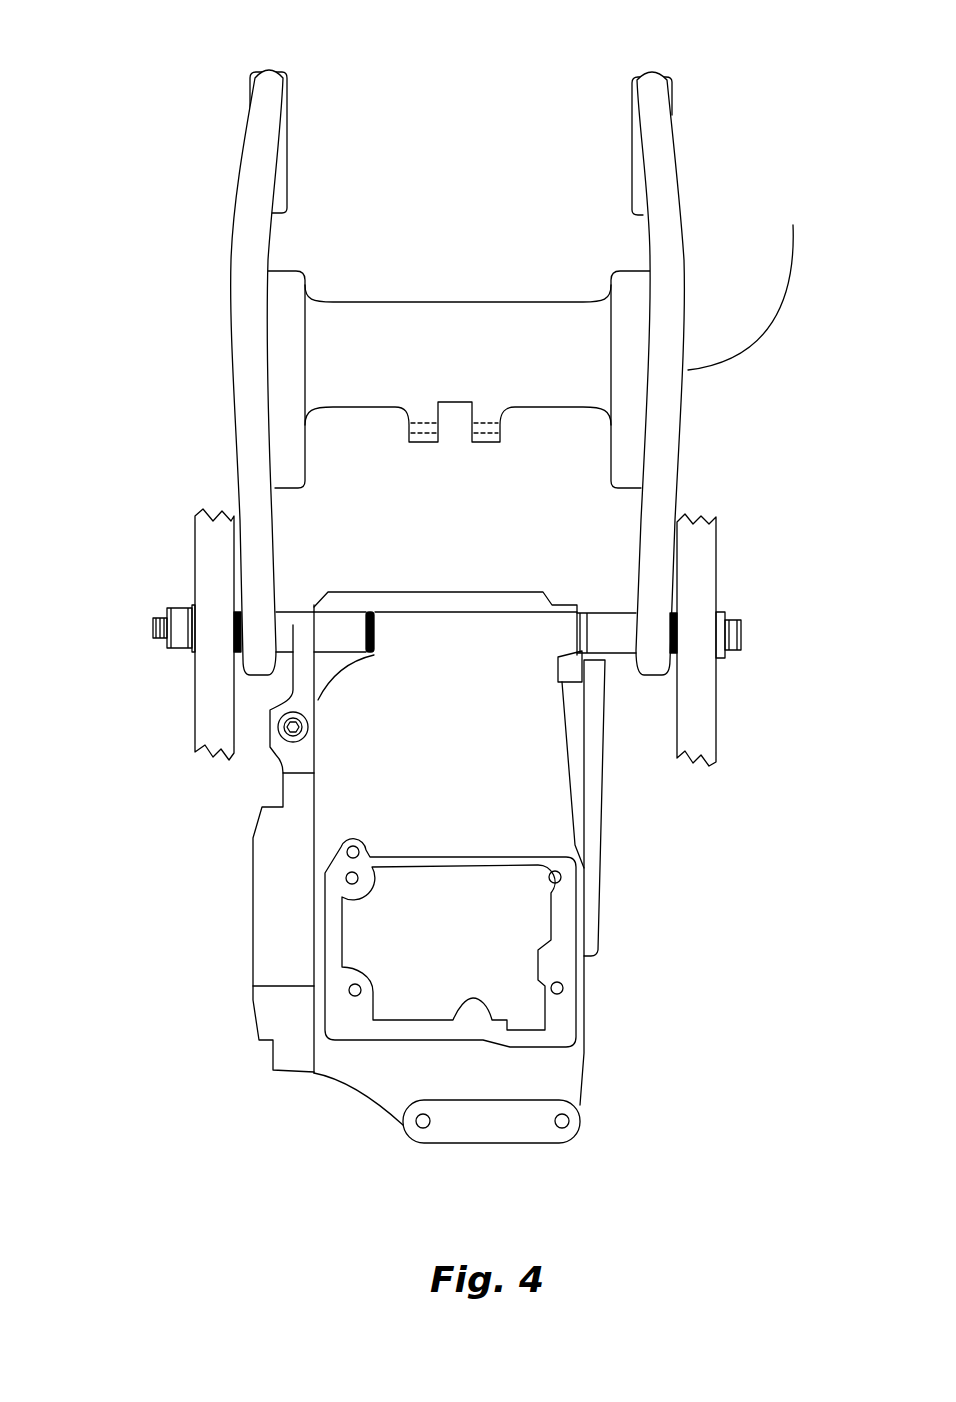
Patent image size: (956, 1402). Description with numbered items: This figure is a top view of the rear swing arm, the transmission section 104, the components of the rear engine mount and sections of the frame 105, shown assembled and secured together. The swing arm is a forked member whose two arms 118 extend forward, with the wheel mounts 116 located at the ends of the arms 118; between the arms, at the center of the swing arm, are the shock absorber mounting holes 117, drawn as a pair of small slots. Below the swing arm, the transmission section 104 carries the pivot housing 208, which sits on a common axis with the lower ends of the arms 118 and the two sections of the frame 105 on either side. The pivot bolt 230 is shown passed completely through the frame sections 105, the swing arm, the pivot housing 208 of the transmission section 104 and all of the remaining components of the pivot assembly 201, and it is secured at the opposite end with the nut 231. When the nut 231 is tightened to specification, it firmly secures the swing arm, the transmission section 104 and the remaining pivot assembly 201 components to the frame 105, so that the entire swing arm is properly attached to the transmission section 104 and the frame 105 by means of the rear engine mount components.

The transmission section 104 is at (265, 900).
The frame 105 is at (193, 702).
The wheel mounts 116 is at (287, 188).
The shock absorber mounting holes 117 is at (489, 412).
The arms 118 is at (247, 229).
The pivot assembly 201 is at (604, 603).
The pivot housing 208 is at (473, 628).
The pivot bolt 230 is at (745, 633).
The nut 231 is at (181, 607).